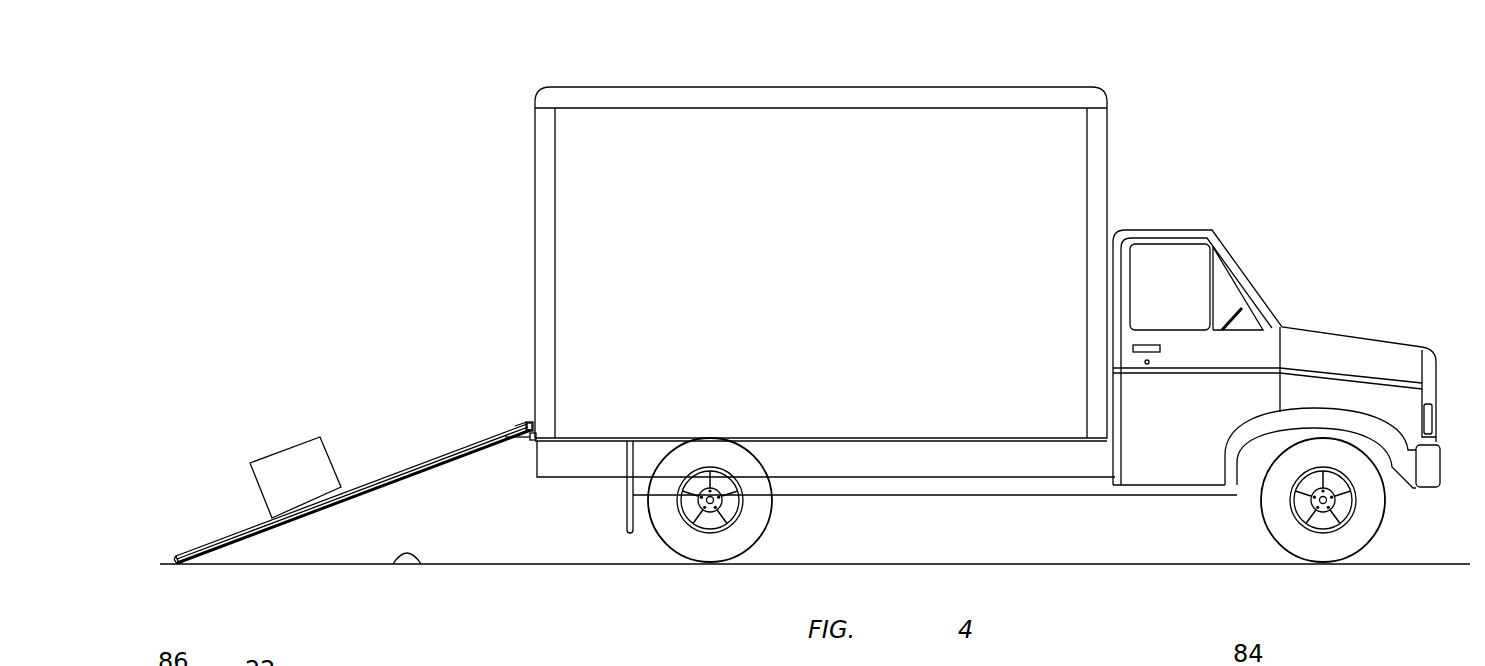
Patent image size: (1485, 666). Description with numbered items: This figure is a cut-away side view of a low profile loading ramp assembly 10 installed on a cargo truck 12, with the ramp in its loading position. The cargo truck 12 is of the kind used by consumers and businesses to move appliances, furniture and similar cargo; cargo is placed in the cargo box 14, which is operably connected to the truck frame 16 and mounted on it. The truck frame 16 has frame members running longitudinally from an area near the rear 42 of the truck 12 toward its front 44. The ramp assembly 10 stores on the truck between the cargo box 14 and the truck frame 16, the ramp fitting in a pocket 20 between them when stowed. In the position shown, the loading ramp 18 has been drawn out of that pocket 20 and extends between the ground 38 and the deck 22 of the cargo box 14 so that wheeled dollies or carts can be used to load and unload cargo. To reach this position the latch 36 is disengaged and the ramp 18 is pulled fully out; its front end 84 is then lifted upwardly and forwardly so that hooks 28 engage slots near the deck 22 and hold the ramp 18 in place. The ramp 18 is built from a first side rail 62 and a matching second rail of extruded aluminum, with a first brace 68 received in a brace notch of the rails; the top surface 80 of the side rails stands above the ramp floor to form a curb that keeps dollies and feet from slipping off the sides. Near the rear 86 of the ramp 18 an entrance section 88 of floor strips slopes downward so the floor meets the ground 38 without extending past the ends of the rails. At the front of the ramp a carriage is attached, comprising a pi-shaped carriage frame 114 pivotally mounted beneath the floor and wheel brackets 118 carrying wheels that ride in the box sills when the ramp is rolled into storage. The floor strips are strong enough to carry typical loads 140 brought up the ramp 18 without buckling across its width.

The low profile loading ramp assembly 10 is at (415, 345).
The cargo truck 12 is at (1255, 280).
The cargo box 14 is at (543, 140).
The truck frame 16 is at (585, 467).
The loading ramp 18 is at (392, 468).
The pocket 20 is at (1310, 665).
The deck 22 is at (528, 420).
The hooks 28 is at (525, 422).
The latch 36 is at (528, 445).
The ground 38 is at (398, 561).
The rear of the truck 42 is at (513, 514).
The front of the truck 44 is at (1455, 354).
The first side rail 62 is at (237, 527).
The first brace 68 is at (310, 513).
The top surface of the side rails 80 is at (357, 480).
The front end of the ramp 84 is at (520, 422).
The rear of the ramp 86 is at (207, 540).
The entrance section 88 is at (177, 567).
The carriage frame 114 is at (513, 445).
The wheel brackets 118 is at (1373, 661).
The loads 140 is at (307, 450).